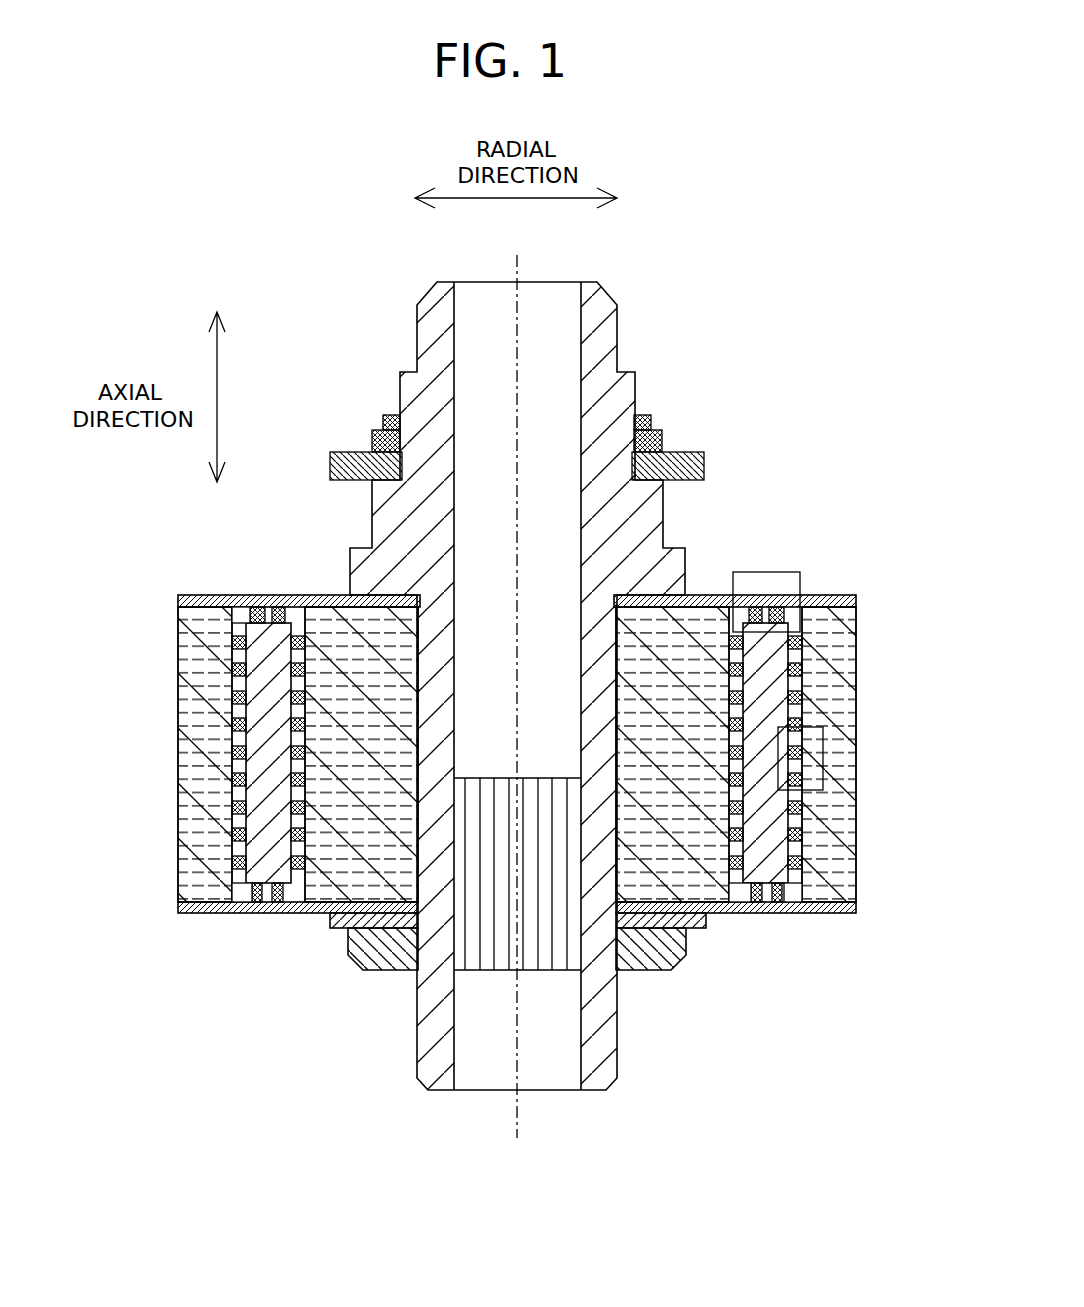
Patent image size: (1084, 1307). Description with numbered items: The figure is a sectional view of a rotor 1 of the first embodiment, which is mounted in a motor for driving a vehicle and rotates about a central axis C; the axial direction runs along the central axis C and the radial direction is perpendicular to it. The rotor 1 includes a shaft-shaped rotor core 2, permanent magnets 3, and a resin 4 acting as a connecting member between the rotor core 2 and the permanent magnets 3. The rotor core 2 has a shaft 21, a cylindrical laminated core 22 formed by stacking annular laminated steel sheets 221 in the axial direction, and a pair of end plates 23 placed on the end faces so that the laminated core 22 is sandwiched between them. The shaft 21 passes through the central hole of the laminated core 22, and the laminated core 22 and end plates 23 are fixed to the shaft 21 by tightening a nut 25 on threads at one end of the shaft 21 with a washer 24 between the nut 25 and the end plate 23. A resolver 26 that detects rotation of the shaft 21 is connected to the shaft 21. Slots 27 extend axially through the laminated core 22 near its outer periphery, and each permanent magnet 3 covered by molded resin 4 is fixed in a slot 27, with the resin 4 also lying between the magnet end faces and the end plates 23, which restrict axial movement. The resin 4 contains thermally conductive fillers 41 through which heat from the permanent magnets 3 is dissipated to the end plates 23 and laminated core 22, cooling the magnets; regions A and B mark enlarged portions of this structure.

The rotor 1 is at (830, 248).
The rotor core 2 is at (515, 728).
The permanent magnet 3 is at (266, 885).
The resin 4 is at (241, 612).
The shaft 21 is at (617, 1055).
The laminated core 22 is at (515, 756).
The end plate 23 is at (310, 597).
The washer 24 is at (337, 928).
The nut 25 is at (380, 972).
The resolver 26 is at (352, 455).
The slot 27 is at (240, 892).
The thermally conductive filler 41 is at (275, 615).
The laminated steel sheet 221 is at (178, 607).
The region A is at (765, 572).
The region B is at (830, 735).
The central axis C is at (518, 717).